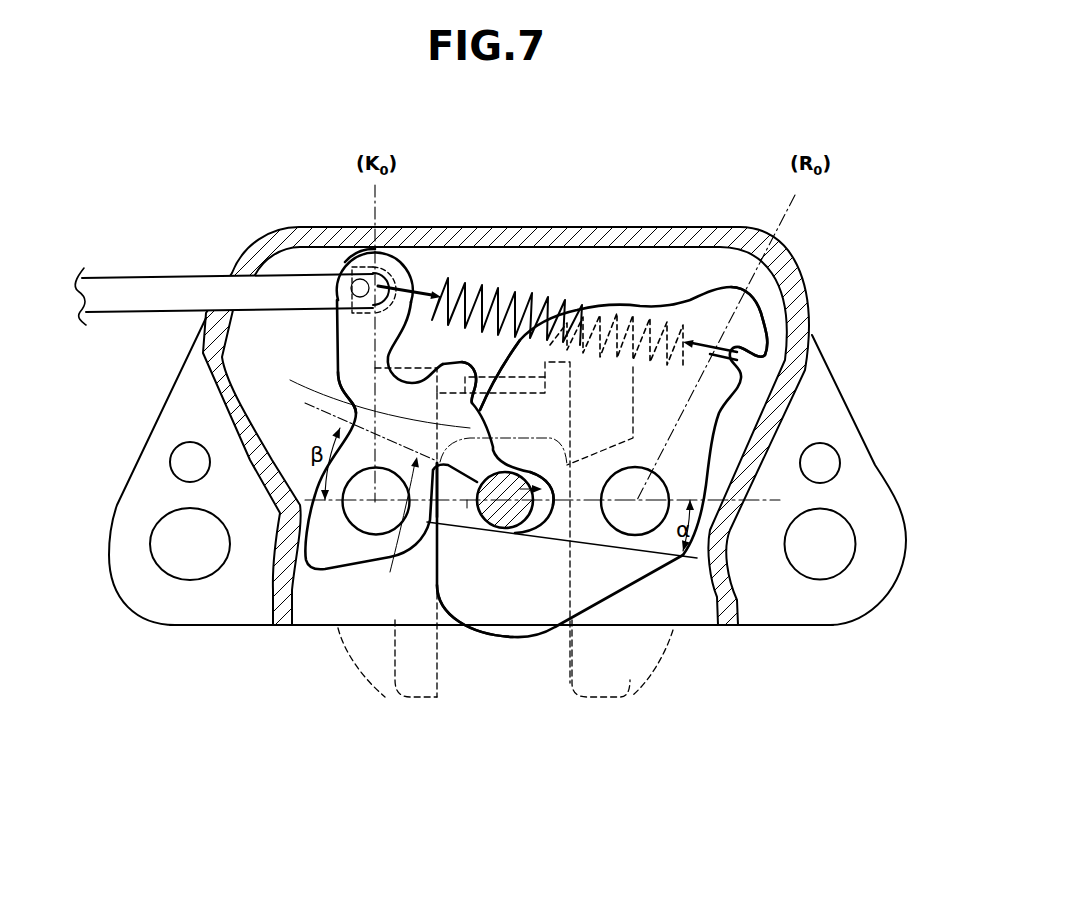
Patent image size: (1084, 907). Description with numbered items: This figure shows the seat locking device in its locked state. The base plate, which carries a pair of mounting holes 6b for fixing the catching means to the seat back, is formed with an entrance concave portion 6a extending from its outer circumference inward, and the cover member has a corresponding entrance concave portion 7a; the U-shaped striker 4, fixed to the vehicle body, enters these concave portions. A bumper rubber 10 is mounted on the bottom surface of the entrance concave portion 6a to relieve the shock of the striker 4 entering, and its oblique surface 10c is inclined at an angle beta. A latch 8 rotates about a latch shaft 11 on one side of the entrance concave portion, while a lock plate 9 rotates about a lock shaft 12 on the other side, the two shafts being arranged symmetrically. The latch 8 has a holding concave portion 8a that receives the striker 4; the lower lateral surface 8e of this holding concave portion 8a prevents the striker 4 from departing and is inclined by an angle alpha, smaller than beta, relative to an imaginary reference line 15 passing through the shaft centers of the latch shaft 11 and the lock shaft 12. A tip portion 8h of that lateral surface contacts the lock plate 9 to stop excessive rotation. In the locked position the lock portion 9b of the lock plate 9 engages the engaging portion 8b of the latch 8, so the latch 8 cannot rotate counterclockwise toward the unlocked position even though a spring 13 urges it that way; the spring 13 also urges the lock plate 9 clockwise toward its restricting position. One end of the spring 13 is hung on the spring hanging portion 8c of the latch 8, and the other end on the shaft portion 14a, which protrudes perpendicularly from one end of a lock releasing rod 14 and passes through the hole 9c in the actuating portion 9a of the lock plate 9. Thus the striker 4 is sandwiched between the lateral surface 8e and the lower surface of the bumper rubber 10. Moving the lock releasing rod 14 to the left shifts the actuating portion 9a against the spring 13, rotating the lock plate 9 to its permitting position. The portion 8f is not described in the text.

The striker 4 is at (543, 507).
The entrance concave portion 6a is at (485, 535).
The entrance concave portion 7a is at (485, 613).
The mounting holes 6b is at (192, 555).
The latch 8 is at (642, 306).
The holding concave portion 8a is at (550, 520).
The engaging portion 8b is at (482, 400).
The spring hanging portion 8c is at (765, 347).
The lateral surface 8e is at (467, 524).
The pawl lower portion 8f is at (523, 553).
The tip portion 8h is at (443, 560).
The lock plate 9 is at (345, 370).
The actuating portion 9a is at (352, 267).
The lock portion 9b is at (352, 404).
The hole 9c is at (350, 278).
The bumper rubber 10 is at (600, 424).
The oblique surface 10c is at (388, 697).
The latch shaft 11 is at (638, 522).
The lock shaft 12 is at (371, 520).
The spring 13 is at (490, 292).
The lock releasing rod 14 is at (110, 283).
The shaft portion 14a is at (362, 300).
The reference line 15 is at (750, 508).